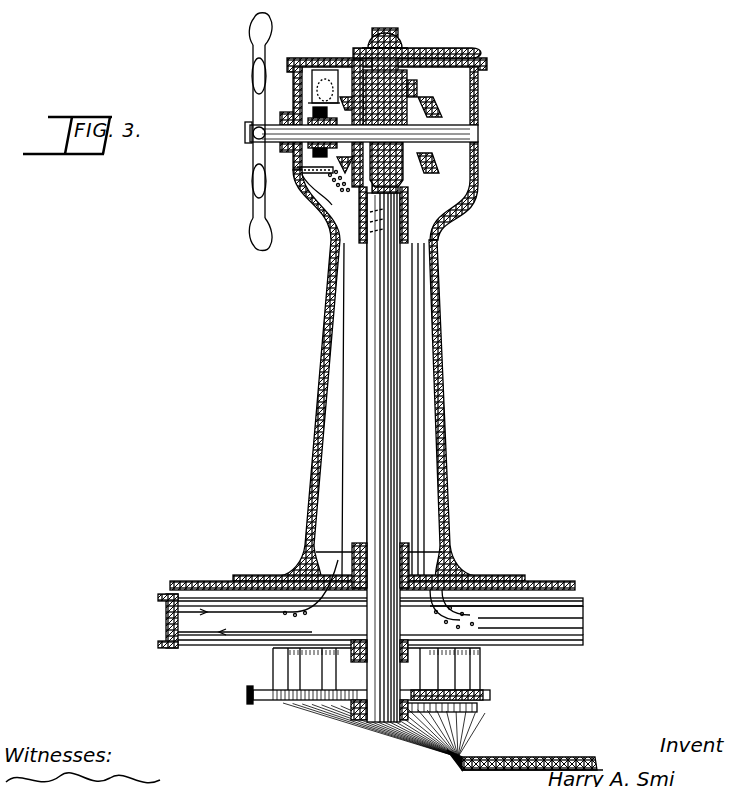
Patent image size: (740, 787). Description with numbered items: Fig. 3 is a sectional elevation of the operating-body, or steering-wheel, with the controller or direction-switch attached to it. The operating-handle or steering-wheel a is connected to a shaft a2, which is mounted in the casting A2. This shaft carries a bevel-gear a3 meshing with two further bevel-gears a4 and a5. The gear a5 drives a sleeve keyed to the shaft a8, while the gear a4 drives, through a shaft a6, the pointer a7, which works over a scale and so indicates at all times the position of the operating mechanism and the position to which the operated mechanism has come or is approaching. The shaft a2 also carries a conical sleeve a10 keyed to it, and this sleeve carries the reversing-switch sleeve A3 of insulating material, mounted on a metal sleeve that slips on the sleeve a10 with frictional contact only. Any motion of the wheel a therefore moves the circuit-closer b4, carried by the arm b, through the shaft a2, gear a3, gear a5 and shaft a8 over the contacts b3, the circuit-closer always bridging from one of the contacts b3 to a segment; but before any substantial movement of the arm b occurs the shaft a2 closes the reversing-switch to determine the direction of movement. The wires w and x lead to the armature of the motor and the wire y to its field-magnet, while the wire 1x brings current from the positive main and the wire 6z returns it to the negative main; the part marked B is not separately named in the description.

The operating-handle or steering-wheel a is at (252, 66).
The shaft a2 is at (479, 134).
The bevel-gear a3 is at (436, 110).
The bevel-gear a4 is at (356, 96).
The bevel-gear a5 is at (440, 177).
The shaft a6 is at (402, 46).
The pointer a7 is at (430, 49).
The shaft a8 is at (401, 293).
The sleeve a10 is at (339, 167).
The casting A2 is at (444, 347).
The reversing-switch sleeve A3 is at (322, 184).
The wire 1x is at (141, 612).
The wire 6z is at (204, 634).
The arm b is at (427, 756).
The block B is at (376, 671).
The contacts b3 is at (502, 697).
The circuit-closer b4 is at (478, 711).
The wire w is at (584, 637).
The wire x is at (584, 628).
The wire y is at (585, 616).